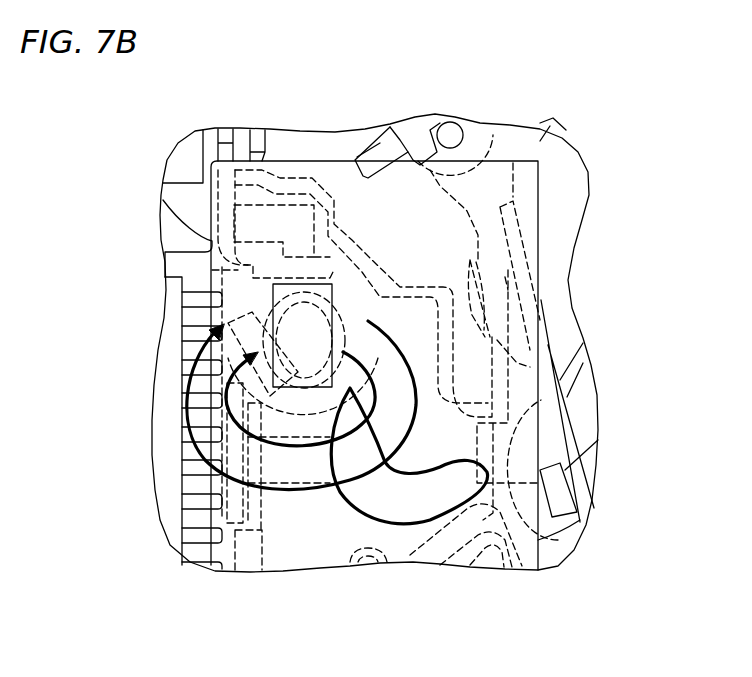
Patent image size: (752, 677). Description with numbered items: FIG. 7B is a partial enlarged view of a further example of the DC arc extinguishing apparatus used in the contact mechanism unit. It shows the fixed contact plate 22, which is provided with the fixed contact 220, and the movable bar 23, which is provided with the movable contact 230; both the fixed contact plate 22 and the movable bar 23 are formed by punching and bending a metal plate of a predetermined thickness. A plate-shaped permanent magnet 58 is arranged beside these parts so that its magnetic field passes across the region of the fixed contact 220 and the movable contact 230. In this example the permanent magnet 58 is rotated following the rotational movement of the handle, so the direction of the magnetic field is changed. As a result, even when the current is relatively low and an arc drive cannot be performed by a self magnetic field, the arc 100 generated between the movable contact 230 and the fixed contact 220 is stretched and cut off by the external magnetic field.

The fixed contact plate 22 is at (280, 417).
The movable bar 23 is at (505, 277).
The permanent magnet 58 is at (300, 320).
The arc 100 is at (398, 503).
The fixed contact 220 is at (375, 322).
The movable contact 230 is at (480, 299).